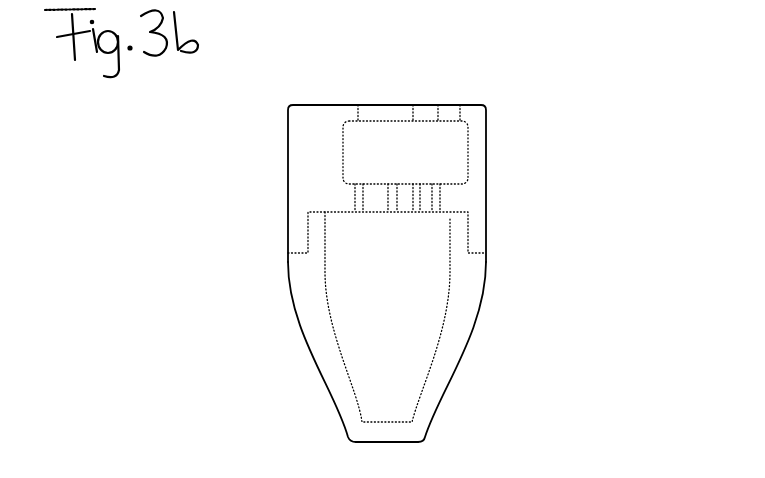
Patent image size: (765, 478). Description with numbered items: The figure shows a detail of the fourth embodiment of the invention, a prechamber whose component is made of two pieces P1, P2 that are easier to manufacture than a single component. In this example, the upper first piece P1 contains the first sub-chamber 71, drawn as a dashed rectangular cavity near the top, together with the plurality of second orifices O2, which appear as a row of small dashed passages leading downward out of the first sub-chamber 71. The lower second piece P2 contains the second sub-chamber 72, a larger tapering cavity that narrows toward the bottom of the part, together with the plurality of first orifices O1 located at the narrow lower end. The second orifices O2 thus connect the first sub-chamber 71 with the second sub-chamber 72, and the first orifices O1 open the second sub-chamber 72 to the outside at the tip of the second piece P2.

The first sub-chamber 71 is at (428, 162).
The second sub-chamber 72 is at (400, 312).
The first orifices O1 is at (423, 441).
The second orifices O2 is at (430, 213).
The first piece P1 is at (465, 198).
The second piece P2 is at (313, 328).